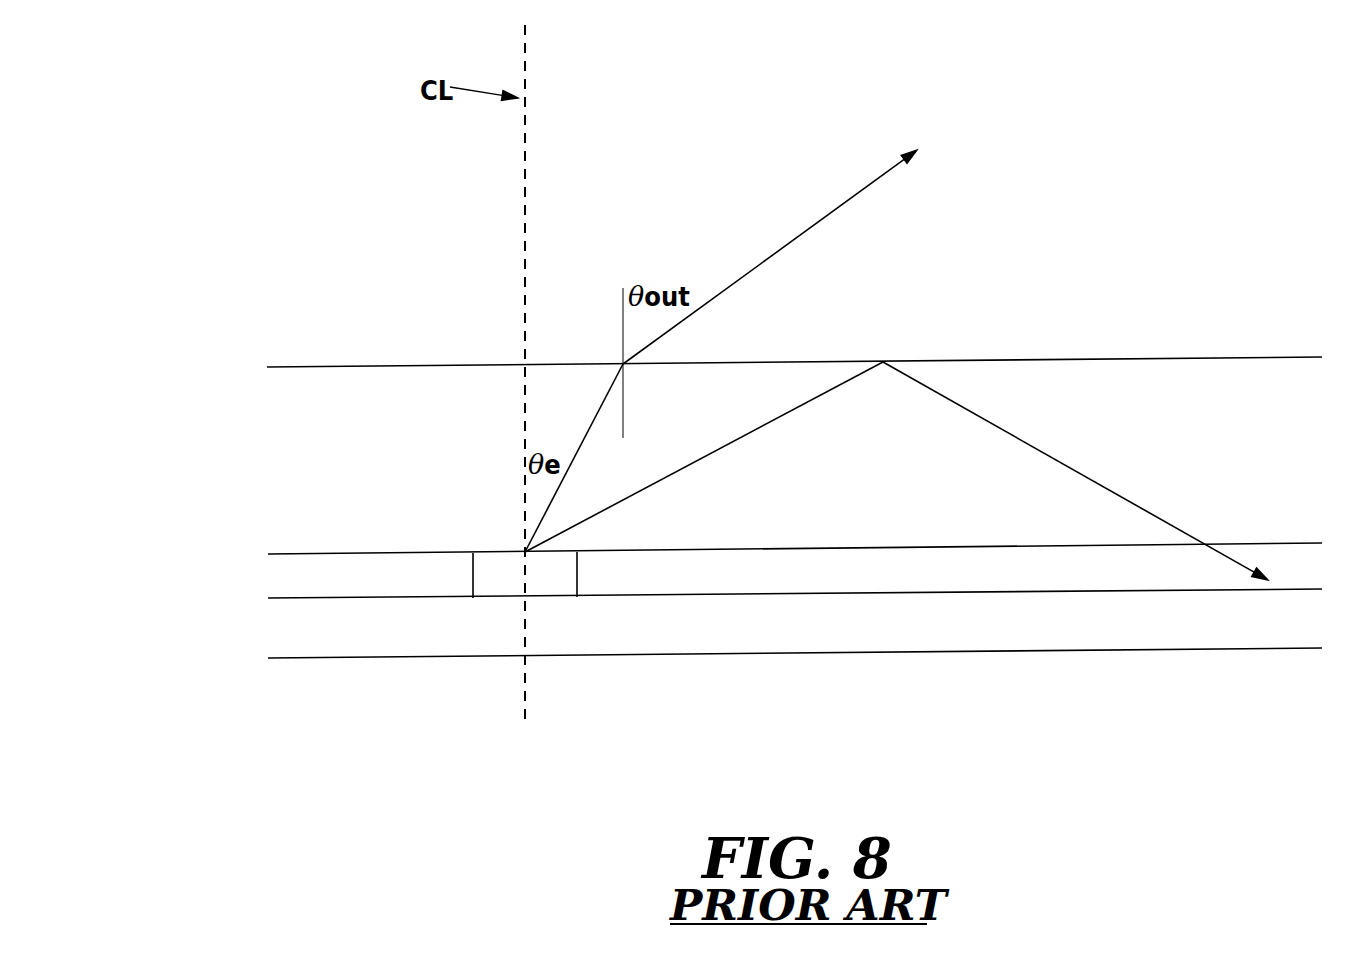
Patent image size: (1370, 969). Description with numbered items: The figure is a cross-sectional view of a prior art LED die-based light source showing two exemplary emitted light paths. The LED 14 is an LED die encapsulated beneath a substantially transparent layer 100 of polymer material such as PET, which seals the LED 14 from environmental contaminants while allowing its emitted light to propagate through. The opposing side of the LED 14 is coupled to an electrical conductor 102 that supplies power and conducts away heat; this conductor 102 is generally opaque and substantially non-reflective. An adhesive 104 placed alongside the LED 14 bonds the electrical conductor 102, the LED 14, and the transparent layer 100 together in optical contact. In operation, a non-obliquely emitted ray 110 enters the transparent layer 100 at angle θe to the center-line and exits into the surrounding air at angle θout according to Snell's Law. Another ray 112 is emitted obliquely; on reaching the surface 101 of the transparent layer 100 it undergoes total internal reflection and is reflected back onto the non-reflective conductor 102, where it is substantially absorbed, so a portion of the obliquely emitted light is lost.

The transparent layer 100 is at (279, 422).
The surface 101 is at (333, 345).
The electrical conductor 102 is at (280, 630).
The adhesive 104 is at (280, 576).
The non-obliquely emitted ray 110 is at (851, 174).
The obliquely emitted ray 112 is at (786, 389).
The LED 14 is at (492, 599).